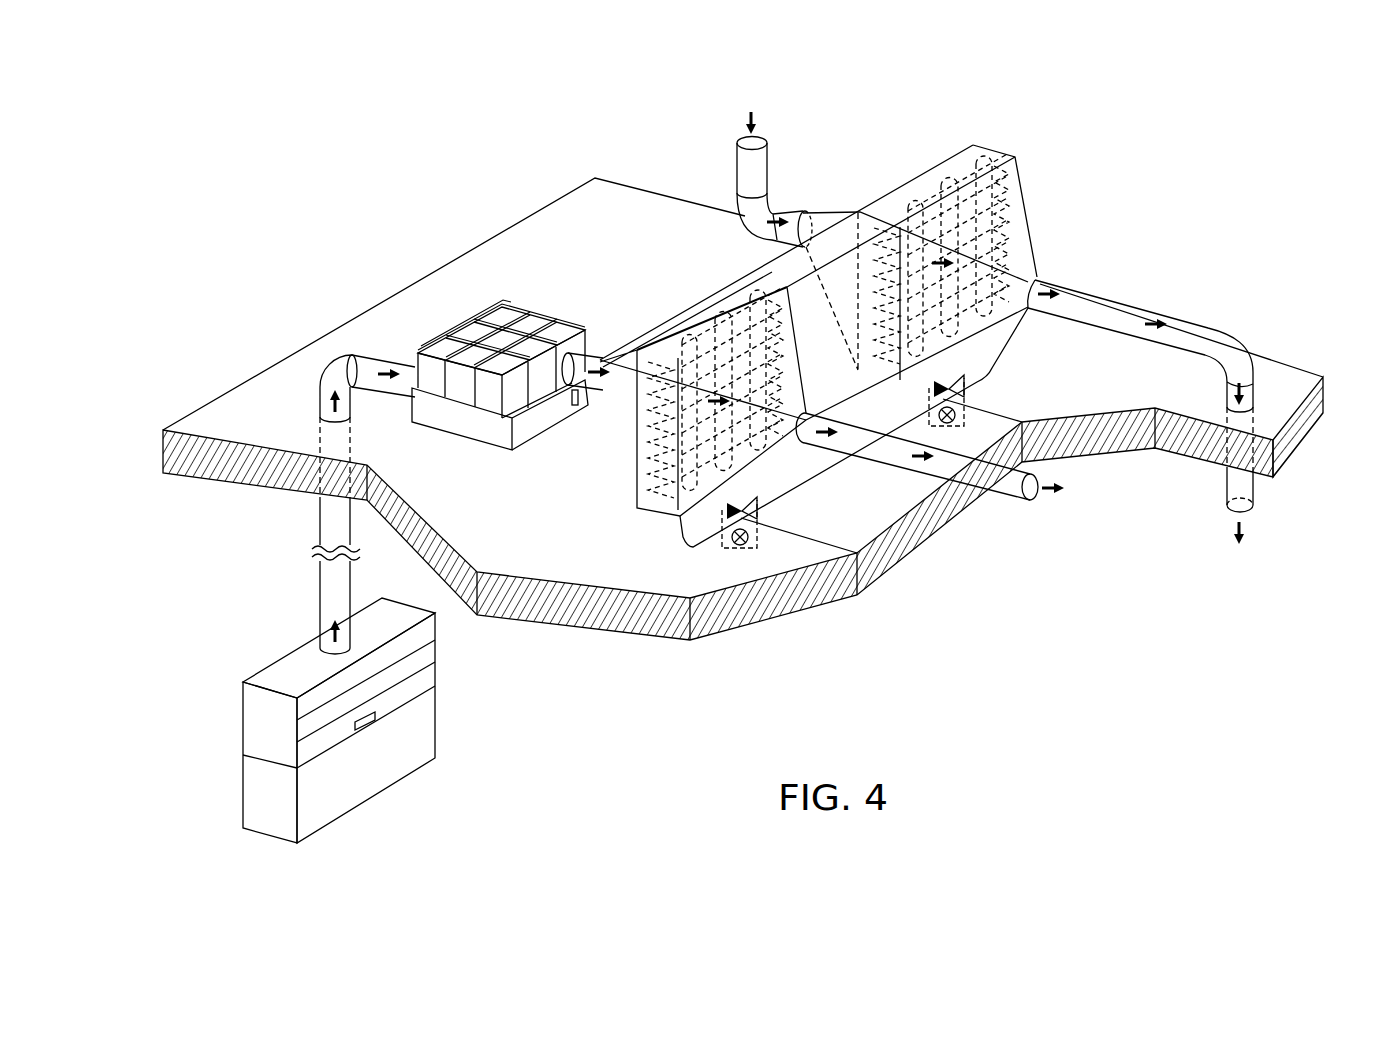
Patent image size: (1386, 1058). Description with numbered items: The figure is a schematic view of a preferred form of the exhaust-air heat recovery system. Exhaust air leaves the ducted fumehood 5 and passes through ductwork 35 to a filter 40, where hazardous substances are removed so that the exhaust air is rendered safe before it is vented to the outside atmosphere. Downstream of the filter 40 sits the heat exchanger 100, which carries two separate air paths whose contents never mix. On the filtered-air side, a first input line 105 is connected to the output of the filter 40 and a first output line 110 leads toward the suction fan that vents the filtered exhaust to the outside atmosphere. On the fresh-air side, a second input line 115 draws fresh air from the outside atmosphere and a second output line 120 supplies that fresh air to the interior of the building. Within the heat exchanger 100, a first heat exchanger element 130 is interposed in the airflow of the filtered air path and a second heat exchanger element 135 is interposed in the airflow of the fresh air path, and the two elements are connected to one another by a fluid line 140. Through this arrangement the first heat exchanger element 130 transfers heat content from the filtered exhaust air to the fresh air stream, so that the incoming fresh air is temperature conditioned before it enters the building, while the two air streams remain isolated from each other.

The ducted fumehood 5 is at (265, 667).
The ductwork 35 is at (322, 360).
The filter 40 is at (467, 317).
The heat exchanger 100 is at (893, 160).
The first input line 105 is at (585, 402).
The first output line 110 is at (1010, 497).
The second input line 115 is at (737, 170).
The second output line 120 is at (1178, 310).
The first heat exchanger element 130 is at (678, 323).
The second heat exchanger element 135 is at (947, 172).
The fluid line 140 is at (793, 497).